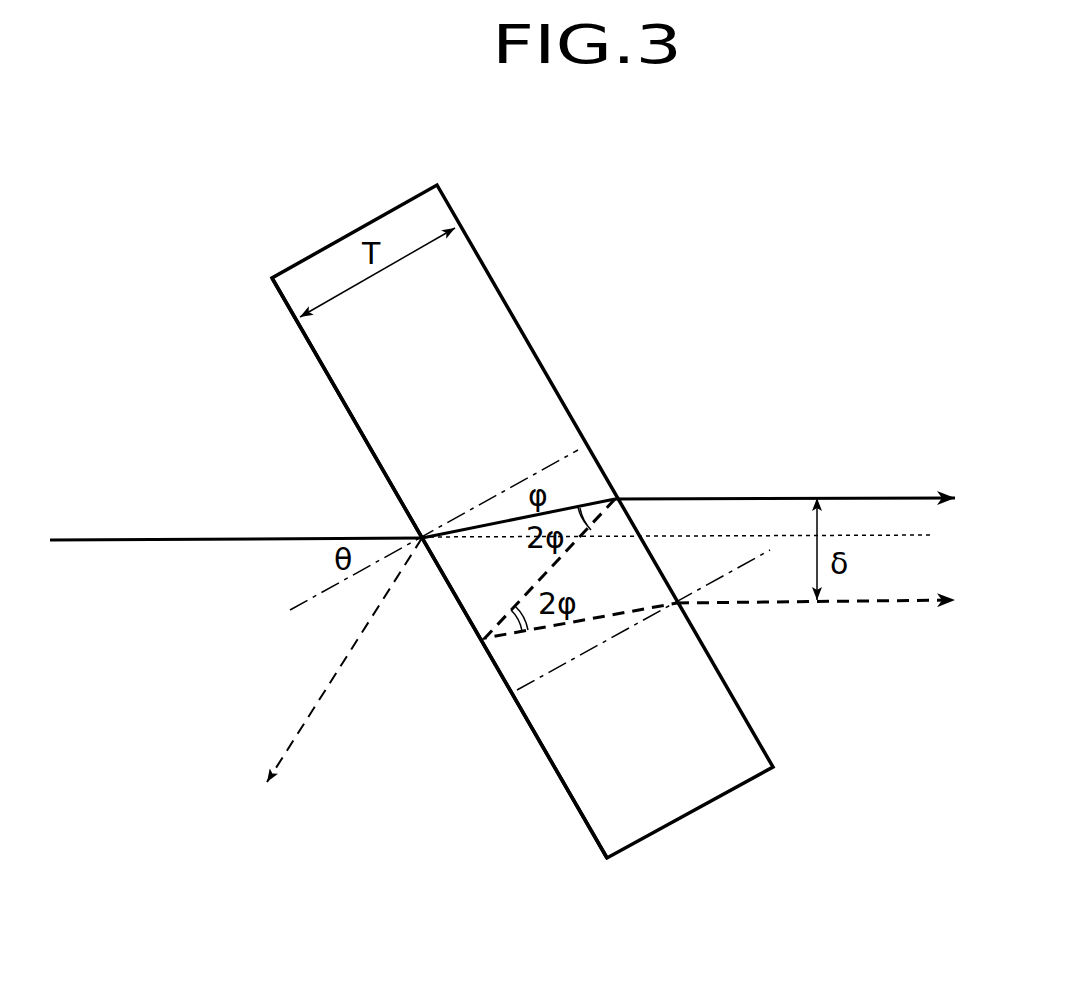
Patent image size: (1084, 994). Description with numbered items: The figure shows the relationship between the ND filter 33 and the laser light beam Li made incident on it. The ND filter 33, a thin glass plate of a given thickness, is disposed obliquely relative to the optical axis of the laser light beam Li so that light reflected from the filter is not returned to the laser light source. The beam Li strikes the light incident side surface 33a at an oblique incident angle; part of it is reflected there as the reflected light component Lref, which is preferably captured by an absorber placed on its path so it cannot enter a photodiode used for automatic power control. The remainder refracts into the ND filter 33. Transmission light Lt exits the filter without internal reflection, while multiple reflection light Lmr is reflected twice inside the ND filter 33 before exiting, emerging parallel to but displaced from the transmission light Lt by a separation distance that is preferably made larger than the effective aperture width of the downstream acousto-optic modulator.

The ND filter 33 is at (748, 180).
The light incident side surface 33a is at (327, 380).
The laser light beam Li is at (218, 540).
The transmission light Lt is at (745, 498).
The multiple reflection light Lmr is at (850, 603).
The reflected light component Lref is at (322, 702).